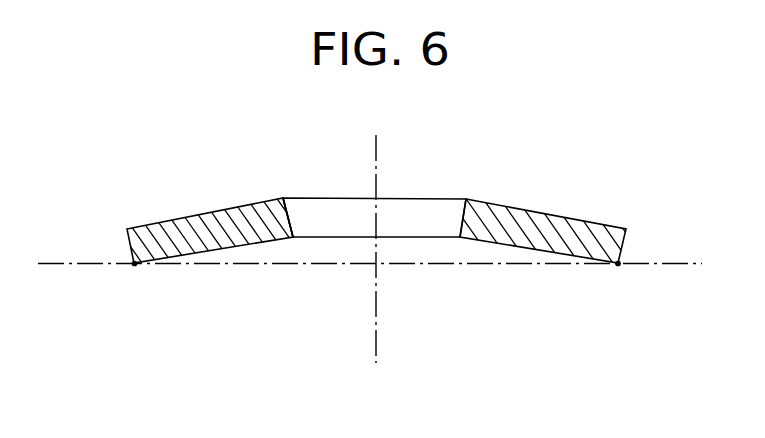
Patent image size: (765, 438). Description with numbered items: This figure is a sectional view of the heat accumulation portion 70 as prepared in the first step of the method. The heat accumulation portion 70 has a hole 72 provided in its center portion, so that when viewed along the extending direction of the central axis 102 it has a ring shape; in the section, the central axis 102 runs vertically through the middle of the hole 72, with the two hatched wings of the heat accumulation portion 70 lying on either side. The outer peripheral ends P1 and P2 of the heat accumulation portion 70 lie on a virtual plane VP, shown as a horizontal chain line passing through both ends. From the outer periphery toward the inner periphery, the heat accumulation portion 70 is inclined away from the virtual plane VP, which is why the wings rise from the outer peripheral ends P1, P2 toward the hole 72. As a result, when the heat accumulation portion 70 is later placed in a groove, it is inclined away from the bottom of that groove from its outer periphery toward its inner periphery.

The heat accumulation portion 70 is at (245, 217).
The hole 72 is at (292, 223).
The central axis 102 is at (376, 322).
The outer peripheral end P1 is at (137, 281).
The outer peripheral end P2 is at (619, 281).
The virtual plane VP is at (678, 265).